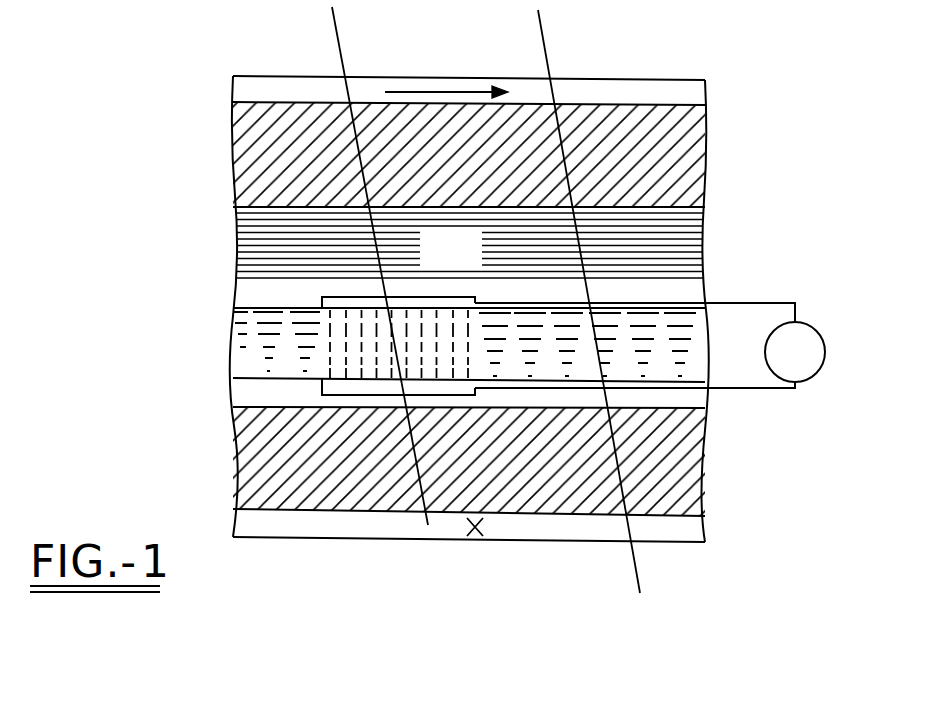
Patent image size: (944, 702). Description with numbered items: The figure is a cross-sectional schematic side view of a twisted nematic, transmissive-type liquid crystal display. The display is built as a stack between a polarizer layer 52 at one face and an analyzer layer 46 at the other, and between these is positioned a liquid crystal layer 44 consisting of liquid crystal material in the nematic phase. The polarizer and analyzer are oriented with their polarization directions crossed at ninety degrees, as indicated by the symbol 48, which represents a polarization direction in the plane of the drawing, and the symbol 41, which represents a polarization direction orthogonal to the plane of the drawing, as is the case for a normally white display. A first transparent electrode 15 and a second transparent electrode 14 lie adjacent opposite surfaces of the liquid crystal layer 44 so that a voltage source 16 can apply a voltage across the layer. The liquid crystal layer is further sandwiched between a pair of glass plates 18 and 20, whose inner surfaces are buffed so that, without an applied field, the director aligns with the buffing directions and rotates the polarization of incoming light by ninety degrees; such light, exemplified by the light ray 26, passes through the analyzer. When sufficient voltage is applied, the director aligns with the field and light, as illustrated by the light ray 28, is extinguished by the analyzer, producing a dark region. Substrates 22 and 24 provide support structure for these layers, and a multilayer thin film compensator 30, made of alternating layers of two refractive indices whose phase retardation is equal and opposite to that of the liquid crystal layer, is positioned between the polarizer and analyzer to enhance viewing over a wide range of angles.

The second transparent electrode 14 is at (460, 396).
The first transparent electrode 15 is at (432, 297).
The voltage source 16 is at (819, 334).
The glass plate 18 is at (712, 290).
The glass plate 20 is at (705, 405).
The substrate 22 is at (710, 170).
The substrate 24 is at (705, 475).
The light ray 26 is at (547, 31).
The light ray 28 is at (338, 31).
The multilayer thin film compensator 30 is at (221, 207).
The polarization direction symbol of the analyzer 41 is at (475, 537).
The liquid crystal layer 44 is at (232, 347).
The analyzer layer 46 is at (705, 528).
The polarization direction symbol of the polarizer 48 is at (463, 88).
The polarizer layer 52 is at (707, 97).